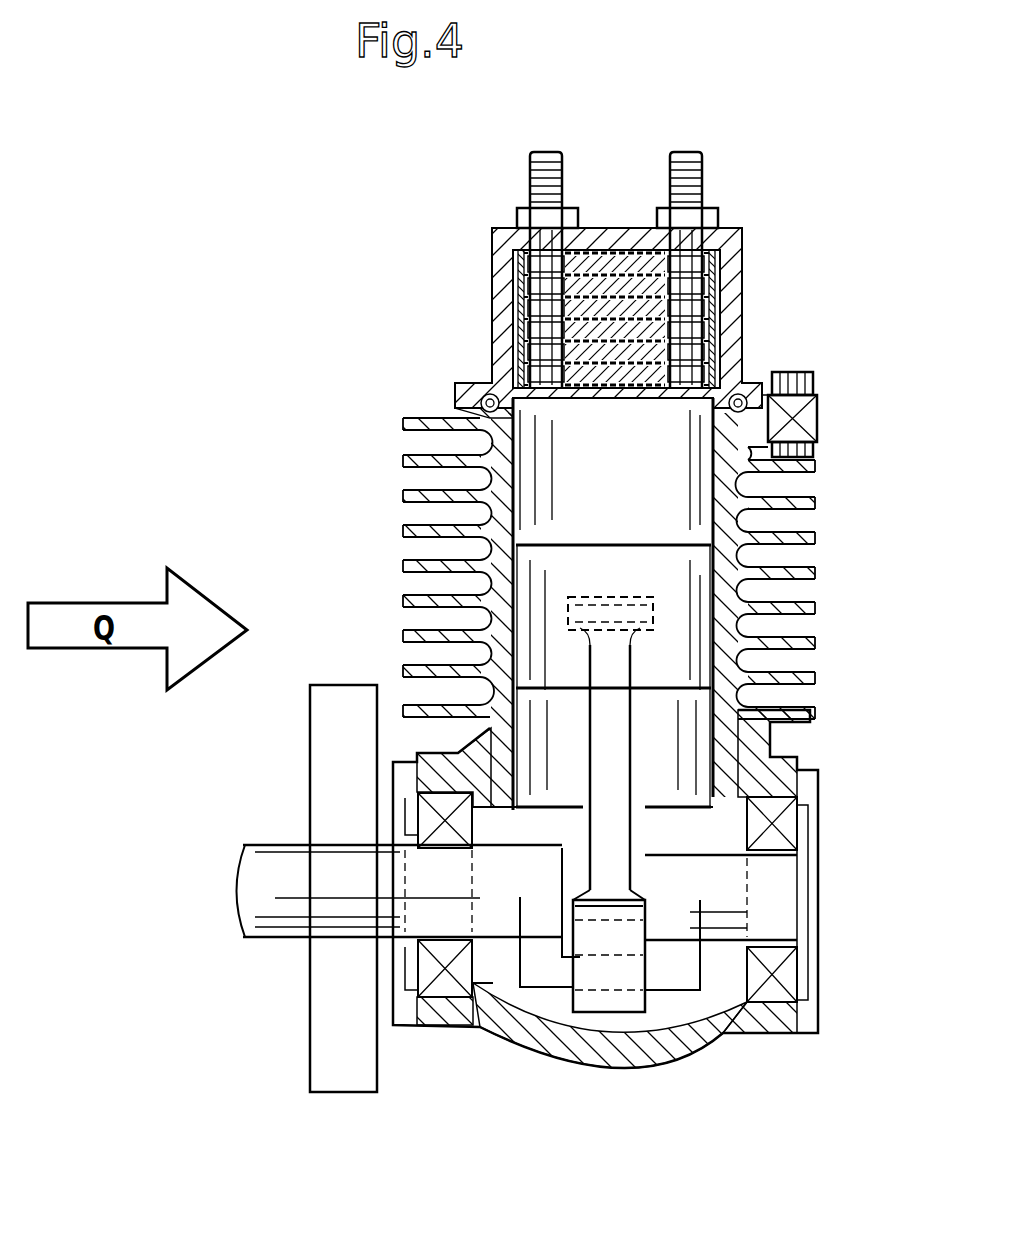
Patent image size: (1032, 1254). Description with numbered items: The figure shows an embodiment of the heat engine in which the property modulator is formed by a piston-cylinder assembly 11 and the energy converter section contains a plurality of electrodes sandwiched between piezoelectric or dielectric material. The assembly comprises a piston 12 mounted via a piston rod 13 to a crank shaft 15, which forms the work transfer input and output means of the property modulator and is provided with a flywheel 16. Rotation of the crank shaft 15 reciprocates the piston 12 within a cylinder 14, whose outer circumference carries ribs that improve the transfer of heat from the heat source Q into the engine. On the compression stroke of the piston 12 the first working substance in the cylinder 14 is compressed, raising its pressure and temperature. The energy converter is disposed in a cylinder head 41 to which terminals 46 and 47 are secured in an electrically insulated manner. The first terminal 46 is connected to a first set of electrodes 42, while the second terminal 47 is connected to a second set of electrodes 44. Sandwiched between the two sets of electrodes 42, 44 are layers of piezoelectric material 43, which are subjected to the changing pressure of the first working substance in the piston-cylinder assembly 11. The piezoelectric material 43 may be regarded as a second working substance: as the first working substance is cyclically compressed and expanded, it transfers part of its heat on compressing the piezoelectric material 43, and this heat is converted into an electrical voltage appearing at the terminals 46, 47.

The piston-cylinder assembly 11 is at (832, 577).
The piston 12 is at (668, 662).
The piston rod 13 is at (605, 752).
The cylinder 14 is at (405, 566).
The crank shaft 15 is at (280, 922).
The flywheel 16 is at (345, 1094).
The cylinder head 41 is at (725, 288).
The first set of electrodes 42 is at (642, 388).
The layers of piezoelectric material 43 is at (590, 385).
The second set of electrodes 44 is at (568, 382).
The first terminal 46 is at (546, 150).
The second terminal 47 is at (680, 150).